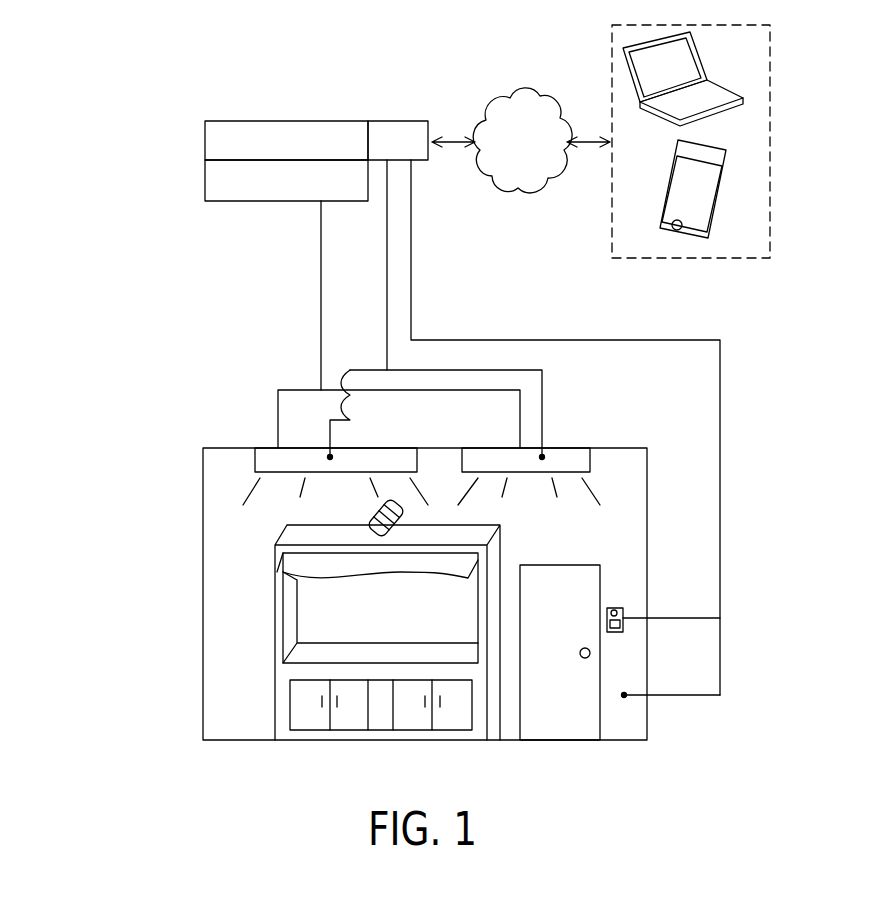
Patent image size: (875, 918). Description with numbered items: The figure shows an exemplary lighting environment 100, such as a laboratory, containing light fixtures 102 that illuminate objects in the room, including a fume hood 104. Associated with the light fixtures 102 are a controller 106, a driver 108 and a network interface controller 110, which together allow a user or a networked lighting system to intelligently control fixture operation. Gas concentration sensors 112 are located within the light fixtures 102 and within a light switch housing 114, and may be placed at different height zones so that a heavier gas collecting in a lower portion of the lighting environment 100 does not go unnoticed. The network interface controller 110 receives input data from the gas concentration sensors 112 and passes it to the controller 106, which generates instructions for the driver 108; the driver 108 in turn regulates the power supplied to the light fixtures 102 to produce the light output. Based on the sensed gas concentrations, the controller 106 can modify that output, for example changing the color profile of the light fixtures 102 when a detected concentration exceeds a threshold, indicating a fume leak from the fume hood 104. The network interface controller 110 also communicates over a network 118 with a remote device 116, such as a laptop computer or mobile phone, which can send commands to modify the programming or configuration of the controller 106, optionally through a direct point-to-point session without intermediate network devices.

The lighting environment 100 is at (205, 487).
The light fixtures 102 is at (272, 458).
The fume hood 104 is at (277, 545).
The controller 106 is at (293, 120).
The driver 108 is at (237, 192).
The network interface controller 110 is at (400, 120).
The gas concentration sensors 112 is at (330, 455).
The light switch housing 114 is at (623, 632).
The remote device 116 is at (770, 110).
The network 118 is at (533, 92).